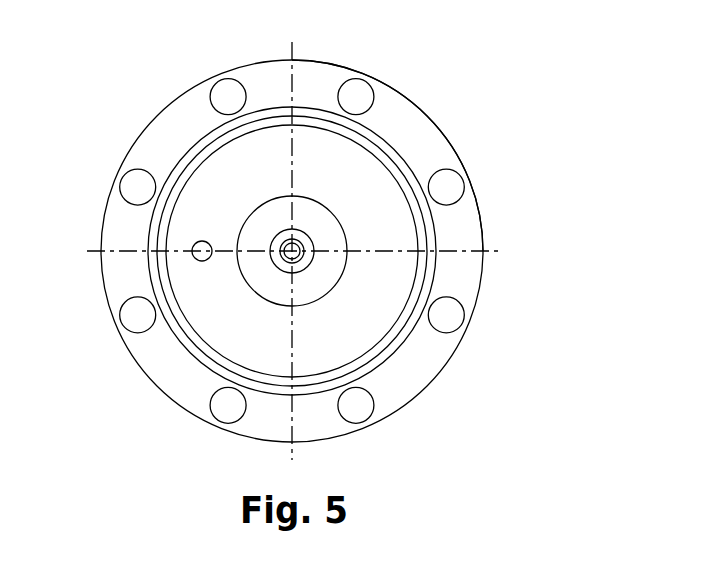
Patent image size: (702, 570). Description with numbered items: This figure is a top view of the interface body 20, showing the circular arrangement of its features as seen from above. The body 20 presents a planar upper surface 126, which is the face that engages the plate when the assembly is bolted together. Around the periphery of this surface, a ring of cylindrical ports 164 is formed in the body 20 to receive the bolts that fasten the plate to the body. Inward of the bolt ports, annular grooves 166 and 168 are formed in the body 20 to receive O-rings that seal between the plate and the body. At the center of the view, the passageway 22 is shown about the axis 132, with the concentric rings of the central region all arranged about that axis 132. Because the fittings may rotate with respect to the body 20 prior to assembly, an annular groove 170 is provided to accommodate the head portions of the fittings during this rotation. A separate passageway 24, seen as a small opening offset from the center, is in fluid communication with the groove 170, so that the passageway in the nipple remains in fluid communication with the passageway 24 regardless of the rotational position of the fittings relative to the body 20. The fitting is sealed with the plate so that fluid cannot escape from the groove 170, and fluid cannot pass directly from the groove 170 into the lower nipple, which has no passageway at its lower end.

The interface body 20 is at (465, 277).
The passageway 22 is at (298, 258).
The passageway 24 is at (203, 245).
The planar upper surface 126 is at (416, 135).
The axis 132 is at (292, 251).
The cylindrical ports 164 is at (223, 92).
The annular groove 166 is at (190, 349).
The annular groove 168 is at (307, 237).
The annular groove 170 is at (405, 229).